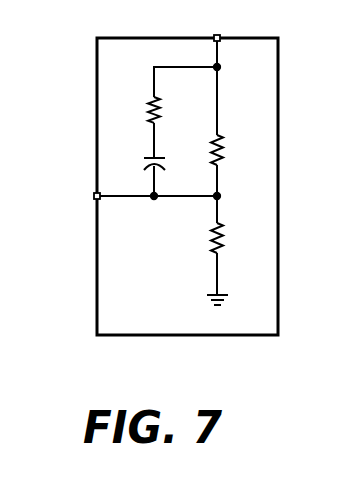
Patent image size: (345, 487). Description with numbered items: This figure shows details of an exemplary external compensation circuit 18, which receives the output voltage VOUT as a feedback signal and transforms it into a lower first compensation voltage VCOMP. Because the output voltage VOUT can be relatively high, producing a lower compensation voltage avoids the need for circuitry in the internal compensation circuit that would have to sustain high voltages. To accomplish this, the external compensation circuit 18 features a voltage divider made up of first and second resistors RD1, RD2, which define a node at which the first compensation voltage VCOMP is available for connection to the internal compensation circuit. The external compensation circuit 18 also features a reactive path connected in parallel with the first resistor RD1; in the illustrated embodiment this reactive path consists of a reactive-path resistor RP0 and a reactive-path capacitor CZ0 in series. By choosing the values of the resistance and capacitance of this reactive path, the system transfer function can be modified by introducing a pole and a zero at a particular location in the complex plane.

The external compensation circuit 18 is at (133, 315).
The output voltage VOUT is at (218, 26).
The first compensation voltage VCOMP is at (67, 197).
The reactive-path resistor RP0 is at (168, 110).
The reactive-path capacitor CZ0 is at (168, 163).
The first resistor RD1 is at (232, 150).
The second resistor RD2 is at (232, 238).